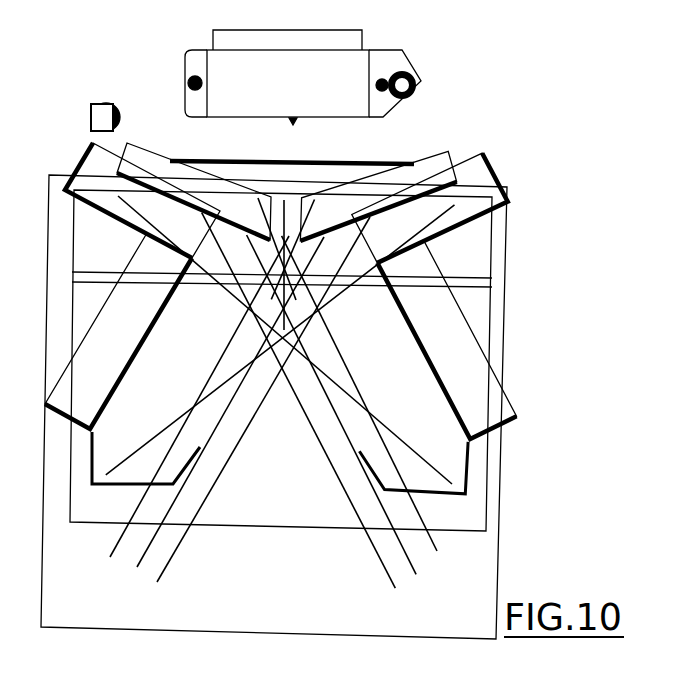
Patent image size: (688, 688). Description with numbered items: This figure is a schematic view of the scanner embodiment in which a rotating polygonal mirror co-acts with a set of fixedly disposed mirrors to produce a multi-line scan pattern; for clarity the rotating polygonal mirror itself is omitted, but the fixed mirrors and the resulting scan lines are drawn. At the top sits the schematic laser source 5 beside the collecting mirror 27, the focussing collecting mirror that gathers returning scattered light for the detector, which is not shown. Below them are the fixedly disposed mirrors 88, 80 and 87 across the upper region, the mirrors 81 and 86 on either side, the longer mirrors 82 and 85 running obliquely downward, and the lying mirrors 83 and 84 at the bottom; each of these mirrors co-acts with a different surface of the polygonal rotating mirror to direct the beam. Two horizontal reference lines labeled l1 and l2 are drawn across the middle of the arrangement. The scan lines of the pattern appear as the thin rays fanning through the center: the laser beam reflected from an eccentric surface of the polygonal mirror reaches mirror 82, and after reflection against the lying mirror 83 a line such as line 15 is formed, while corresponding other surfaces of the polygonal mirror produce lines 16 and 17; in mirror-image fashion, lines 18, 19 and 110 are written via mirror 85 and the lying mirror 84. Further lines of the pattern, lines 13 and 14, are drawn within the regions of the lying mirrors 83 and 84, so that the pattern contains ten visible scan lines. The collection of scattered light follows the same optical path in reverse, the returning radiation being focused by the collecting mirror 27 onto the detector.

The collecting mirror 27 is at (242, 86).
The laser source 5 is at (99, 103).
The fixedly disposed mirror 88 is at (297, 173).
The fixedly disposed mirror 80 is at (172, 171).
The fixedly disposed mirror 87 is at (433, 168).
The fixedly disposed mirror 81 is at (122, 220).
The fixedly disposed mirror 86 is at (461, 223).
The fixedly disposed mirror 82 is at (100, 350).
The fixedly disposed mirror 85 is at (462, 349).
The lying mirror 83 is at (113, 452).
The lying mirror 84 is at (457, 467).
The line l1 is at (306, 266).
The line l2 is at (306, 295).
The scan line 13 is at (412, 455).
The scan line 14 is at (142, 463).
The scan line 15 is at (157, 583).
The scan line 16 is at (135, 567).
The scan line 17 is at (107, 557).
The scan line 18 is at (394, 587).
The scan line 19 is at (414, 574).
The scan line 110 is at (437, 551).